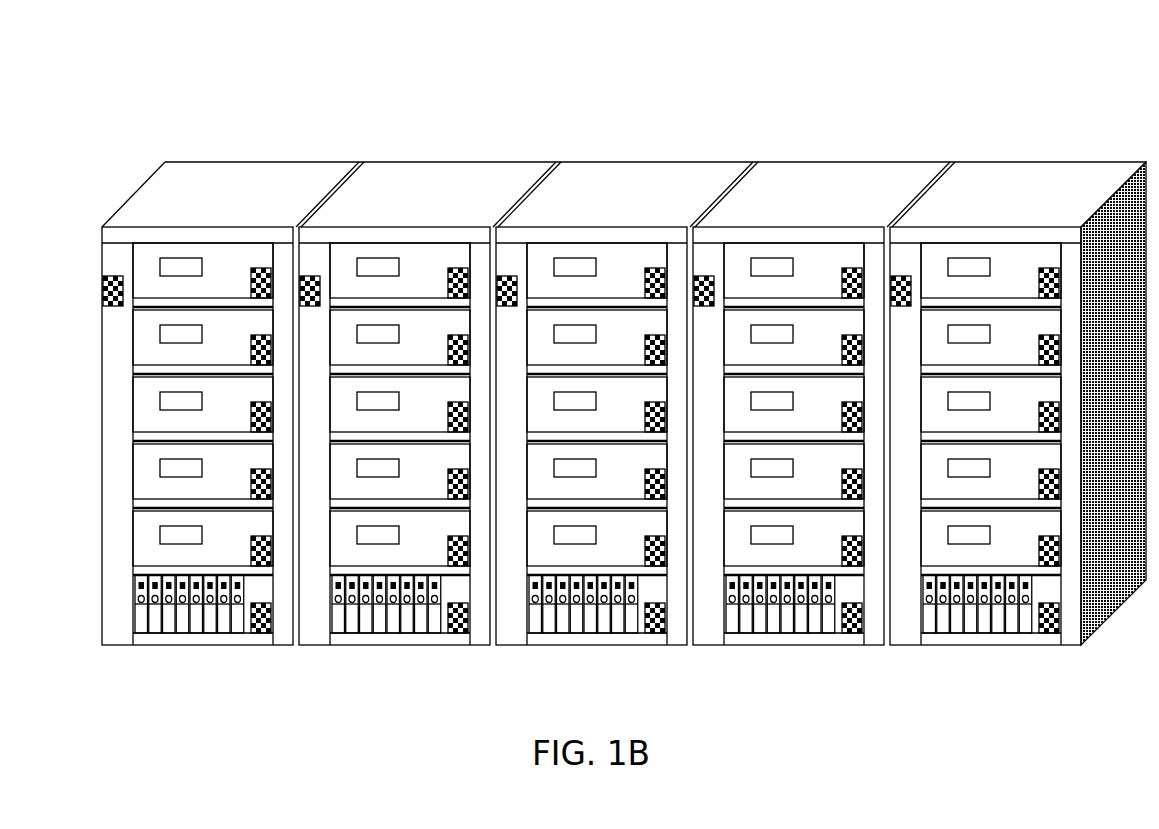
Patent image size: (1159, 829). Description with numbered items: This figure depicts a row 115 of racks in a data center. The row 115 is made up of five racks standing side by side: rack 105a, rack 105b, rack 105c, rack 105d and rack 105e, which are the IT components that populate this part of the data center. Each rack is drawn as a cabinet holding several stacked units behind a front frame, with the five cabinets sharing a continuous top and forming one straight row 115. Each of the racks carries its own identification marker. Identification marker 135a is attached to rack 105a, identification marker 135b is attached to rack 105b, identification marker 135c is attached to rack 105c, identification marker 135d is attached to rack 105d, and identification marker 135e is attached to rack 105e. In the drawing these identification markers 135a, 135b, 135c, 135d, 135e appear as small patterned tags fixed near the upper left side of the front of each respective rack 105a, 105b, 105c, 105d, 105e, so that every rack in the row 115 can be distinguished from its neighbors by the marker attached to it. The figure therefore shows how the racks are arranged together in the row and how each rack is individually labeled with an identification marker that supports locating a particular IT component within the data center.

The row 115 is at (114, 83).
The rack 105a is at (197, 413).
The rack 105b is at (393, 403).
The rack 105c is at (590, 403).
The rack 105d is at (787, 403).
The rack 105e is at (984, 403).
The identification marker 135a is at (102, 282).
The identification marker 135b is at (309, 280).
The identification marker 135c is at (506, 280).
The identification marker 135d is at (703, 280).
The identification marker 135e is at (901, 280).